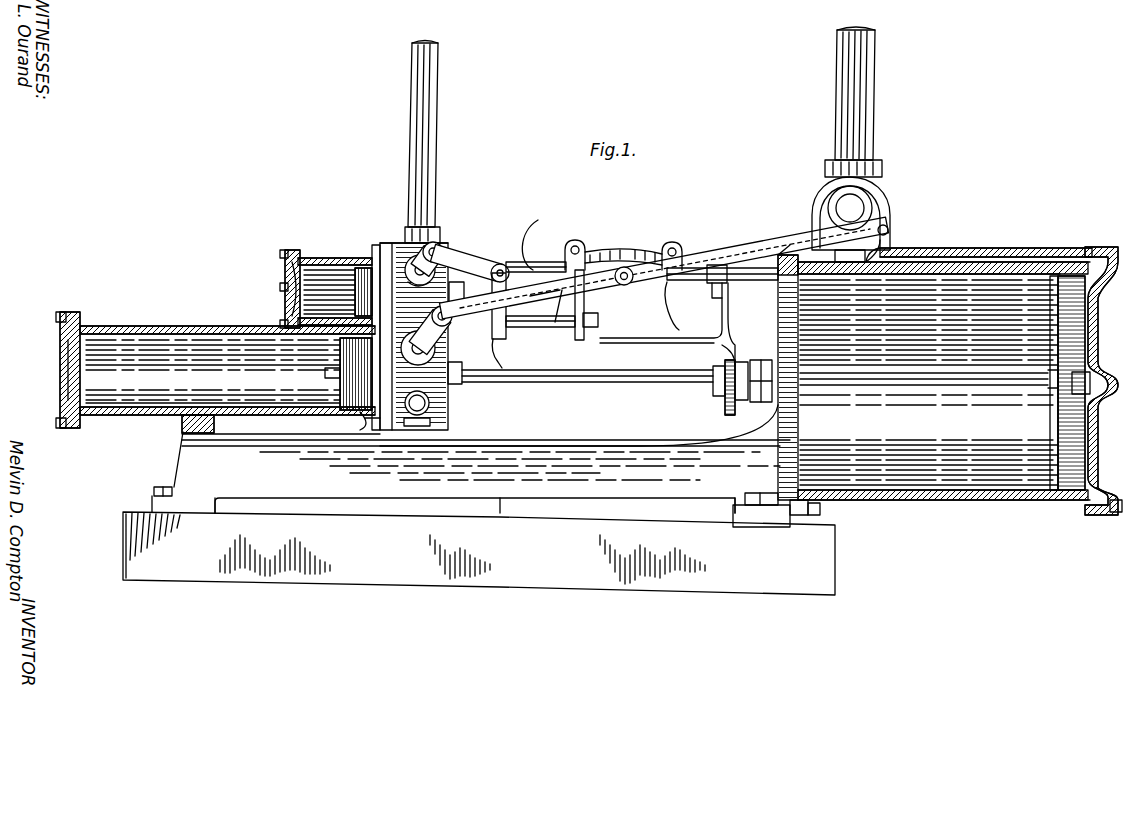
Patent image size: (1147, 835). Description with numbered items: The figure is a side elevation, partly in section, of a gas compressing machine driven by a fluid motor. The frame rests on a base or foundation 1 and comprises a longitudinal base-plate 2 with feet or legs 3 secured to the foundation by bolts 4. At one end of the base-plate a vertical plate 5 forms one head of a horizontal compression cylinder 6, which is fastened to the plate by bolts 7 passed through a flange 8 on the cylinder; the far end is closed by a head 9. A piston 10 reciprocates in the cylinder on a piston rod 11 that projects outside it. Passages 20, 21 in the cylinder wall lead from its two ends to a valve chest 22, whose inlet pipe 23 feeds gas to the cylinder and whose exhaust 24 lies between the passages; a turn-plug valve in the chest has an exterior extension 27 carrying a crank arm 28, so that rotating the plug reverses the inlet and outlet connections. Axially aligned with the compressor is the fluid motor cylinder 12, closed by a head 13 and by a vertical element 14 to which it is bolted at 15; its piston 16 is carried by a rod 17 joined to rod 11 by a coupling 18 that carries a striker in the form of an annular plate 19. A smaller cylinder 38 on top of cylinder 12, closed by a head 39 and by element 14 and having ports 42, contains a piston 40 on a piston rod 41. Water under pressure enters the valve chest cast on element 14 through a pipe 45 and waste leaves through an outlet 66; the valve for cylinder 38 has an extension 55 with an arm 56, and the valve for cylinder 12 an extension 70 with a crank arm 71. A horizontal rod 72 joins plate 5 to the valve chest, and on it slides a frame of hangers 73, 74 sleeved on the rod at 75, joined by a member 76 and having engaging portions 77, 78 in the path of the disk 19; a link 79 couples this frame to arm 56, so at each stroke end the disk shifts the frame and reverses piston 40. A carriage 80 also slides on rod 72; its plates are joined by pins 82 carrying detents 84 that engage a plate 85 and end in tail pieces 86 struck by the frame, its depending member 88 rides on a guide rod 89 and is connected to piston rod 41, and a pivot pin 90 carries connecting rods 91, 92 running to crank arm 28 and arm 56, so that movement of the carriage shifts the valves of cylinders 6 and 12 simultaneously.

The base or foundation 1 is at (533, 590).
The base-plate 2 is at (475, 497).
The feet or legs 3 is at (208, 504).
The bolts 4 is at (152, 493).
The plate 5 is at (778, 330).
The compression cylinder 6 is at (943, 498).
The bolts 7 is at (808, 510).
The flange 8 is at (800, 527).
The head 9 is at (1102, 381).
The piston 10 is at (1050, 440).
The piston rod 11 is at (905, 386).
The cylinder 12 is at (168, 326).
The head 13 is at (60, 368).
The vertically disposed element 14 is at (383, 440).
The bolts 15 is at (366, 433).
The reciprocating piston 16 is at (340, 390).
The rod 17 is at (486, 392).
The coupling 18 is at (714, 390).
The annular plate 19 is at (725, 410).
The passage 20 is at (780, 240).
The passage 21 is at (980, 257).
The valve chest 22 is at (888, 200).
The inlet pipe 23 is at (872, 112).
The exhaust or outlet passage 24 is at (880, 250).
The extension 27 is at (836, 207).
The crank arm 28 is at (889, 229).
The cylinder 38 is at (318, 258).
The head 39 is at (283, 278).
The piston 40 is at (355, 262).
The piston rod 41 is at (462, 296).
The ports 42 is at (296, 252).
The pipe 45 is at (412, 112).
The extension 55 is at (410, 246).
The arm 56 is at (440, 248).
The outlet 66 is at (424, 406).
The extension 70 is at (441, 352).
The crank arm 71 is at (436, 344).
The horizontal rod or member 72 is at (538, 262).
The hanger 73 is at (508, 330).
The hanger 74 is at (728, 306).
The sleeve 75 is at (503, 278).
The member 76 is at (638, 328).
The engaging portion 77 is at (498, 360).
The engaging portion 78 is at (724, 350).
The link 79 is at (470, 258).
The carriage 80 is at (626, 262).
The pins 82 is at (578, 243).
The detent 84 is at (606, 258).
The plate 85 is at (538, 221).
The tail pieces 86 is at (602, 326).
The depending member 88 is at (585, 312).
The guide rod 89 is at (555, 328).
The pivot pin 90 is at (624, 286).
The connecting rod 91 is at (740, 250).
The connecting rod 92 is at (540, 298).